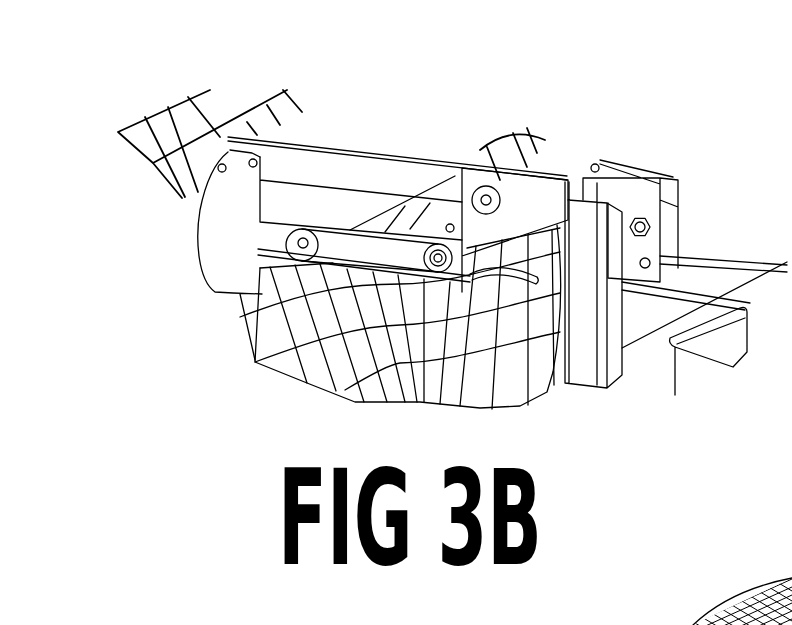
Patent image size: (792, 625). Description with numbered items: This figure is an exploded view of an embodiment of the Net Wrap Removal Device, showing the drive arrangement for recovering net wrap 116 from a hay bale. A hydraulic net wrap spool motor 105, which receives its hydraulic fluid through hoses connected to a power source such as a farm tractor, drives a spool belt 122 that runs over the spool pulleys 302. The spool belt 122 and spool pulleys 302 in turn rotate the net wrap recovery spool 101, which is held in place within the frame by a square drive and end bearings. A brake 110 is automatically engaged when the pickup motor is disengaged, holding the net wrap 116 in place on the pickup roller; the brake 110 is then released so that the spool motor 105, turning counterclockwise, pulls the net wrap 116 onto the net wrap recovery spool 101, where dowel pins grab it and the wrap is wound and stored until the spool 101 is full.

The spool pulleys 302 is at (423, 257).
The net wrap recovery spool 101 is at (378, 203).
The hydraulic net wrap spool motor 105 is at (473, 245).
The brake 110 is at (500, 200).
The spool belt 122 is at (367, 268).
The net wrap 116 is at (791, 542).